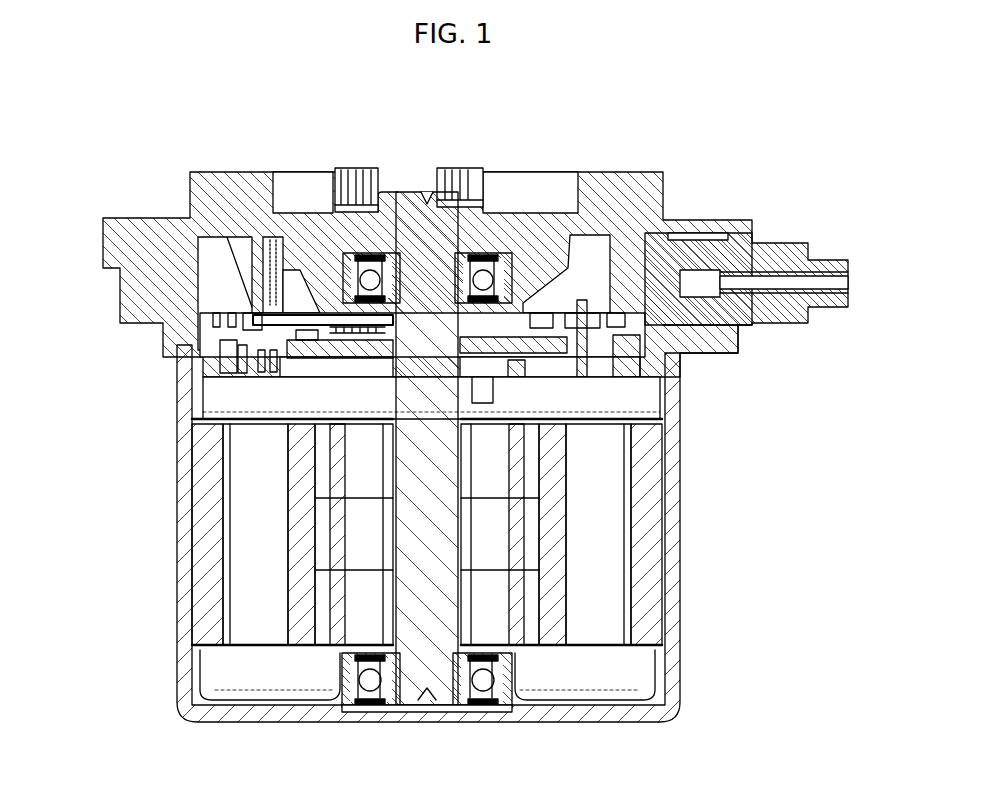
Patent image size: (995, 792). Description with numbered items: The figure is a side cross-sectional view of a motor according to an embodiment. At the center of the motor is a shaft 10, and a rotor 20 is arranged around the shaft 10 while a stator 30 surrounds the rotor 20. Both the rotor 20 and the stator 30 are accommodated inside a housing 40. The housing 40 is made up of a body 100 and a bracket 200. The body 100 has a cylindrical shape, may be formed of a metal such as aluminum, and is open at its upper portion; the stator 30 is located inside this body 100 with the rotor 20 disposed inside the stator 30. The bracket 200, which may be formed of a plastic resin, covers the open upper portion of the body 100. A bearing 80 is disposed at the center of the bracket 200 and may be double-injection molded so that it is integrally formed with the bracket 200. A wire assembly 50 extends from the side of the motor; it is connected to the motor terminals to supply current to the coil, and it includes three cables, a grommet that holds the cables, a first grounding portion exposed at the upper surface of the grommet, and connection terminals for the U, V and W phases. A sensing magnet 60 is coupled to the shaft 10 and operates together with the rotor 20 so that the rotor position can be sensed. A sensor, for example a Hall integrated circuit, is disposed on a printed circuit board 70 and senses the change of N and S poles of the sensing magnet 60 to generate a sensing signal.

The shaft 10 is at (435, 586).
The rotor 20 is at (530, 526).
The stator 30 is at (645, 480).
The housing 40 is at (685, 432).
The wire assembly 50 is at (779, 232).
The sensing magnet 60 is at (302, 366).
The printed circuit board 70 is at (266, 308).
The bearing 80 is at (483, 272).
The body 100 is at (740, 350).
The bracket 200 is at (695, 220).